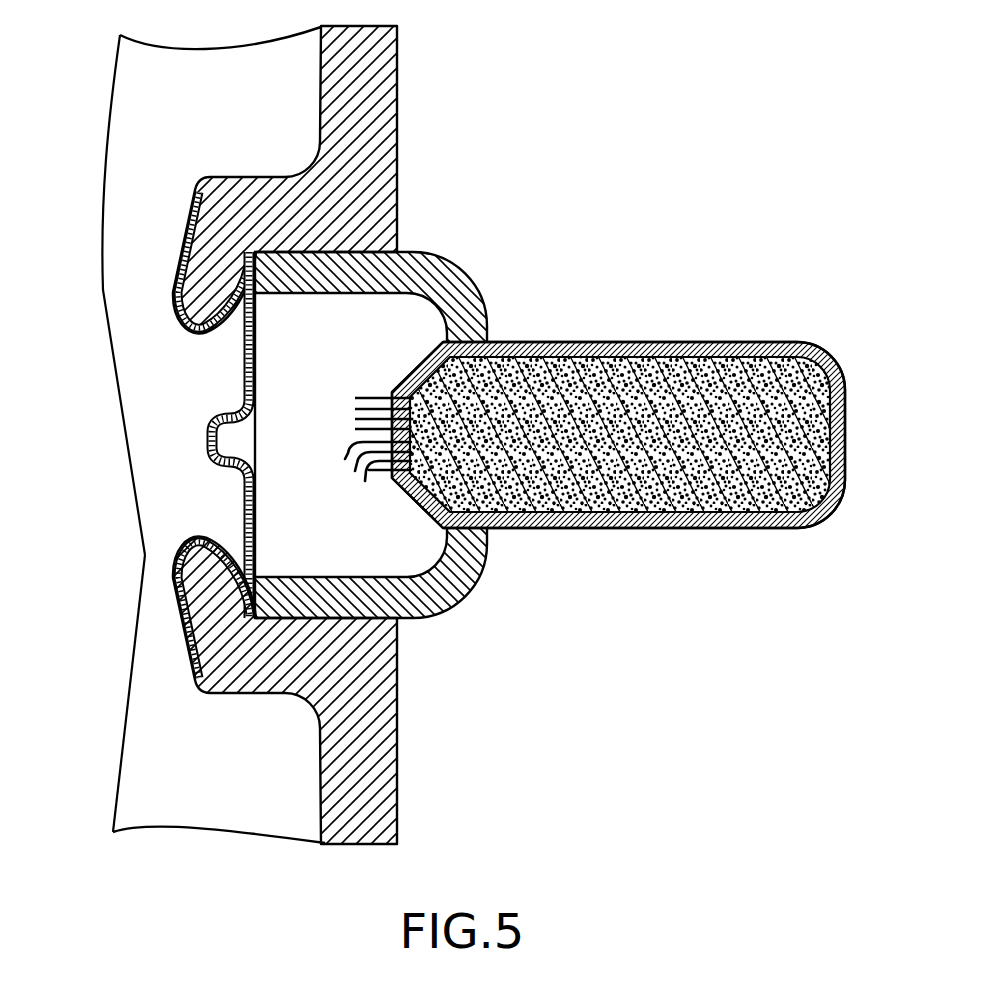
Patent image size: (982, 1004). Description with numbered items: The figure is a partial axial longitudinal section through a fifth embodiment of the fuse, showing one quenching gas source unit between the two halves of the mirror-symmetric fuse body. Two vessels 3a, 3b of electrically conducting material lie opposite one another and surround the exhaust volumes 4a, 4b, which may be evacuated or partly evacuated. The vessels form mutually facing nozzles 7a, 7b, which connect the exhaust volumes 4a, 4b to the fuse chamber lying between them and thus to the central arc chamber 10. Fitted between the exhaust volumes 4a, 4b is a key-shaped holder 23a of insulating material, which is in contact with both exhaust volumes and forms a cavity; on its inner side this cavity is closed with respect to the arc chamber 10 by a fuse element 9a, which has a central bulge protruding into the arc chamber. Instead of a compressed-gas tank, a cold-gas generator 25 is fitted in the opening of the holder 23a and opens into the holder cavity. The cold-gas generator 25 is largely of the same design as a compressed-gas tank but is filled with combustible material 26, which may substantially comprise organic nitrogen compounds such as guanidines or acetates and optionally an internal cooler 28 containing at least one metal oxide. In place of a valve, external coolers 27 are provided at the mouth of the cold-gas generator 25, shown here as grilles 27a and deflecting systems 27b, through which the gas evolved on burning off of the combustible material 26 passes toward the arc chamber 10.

The vessel 3a is at (373, 65).
The vessel 3b is at (367, 817).
The exhaust volume 4a is at (233, 106).
The exhaust volume 4b is at (221, 784).
The nozzle 7a is at (170, 289).
The nozzle 7b is at (172, 578).
The fuse element 9a is at (242, 385).
The arc chamber 10 is at (205, 503).
The holder 23a is at (448, 278).
The cold-gas generator 25 is at (712, 342).
The combustible material 26 is at (617, 530).
The external cooler 27 is at (291, 424).
The grille 27a is at (373, 398).
The deflecting system 27b is at (356, 482).
The internal cooler 28 is at (704, 473).